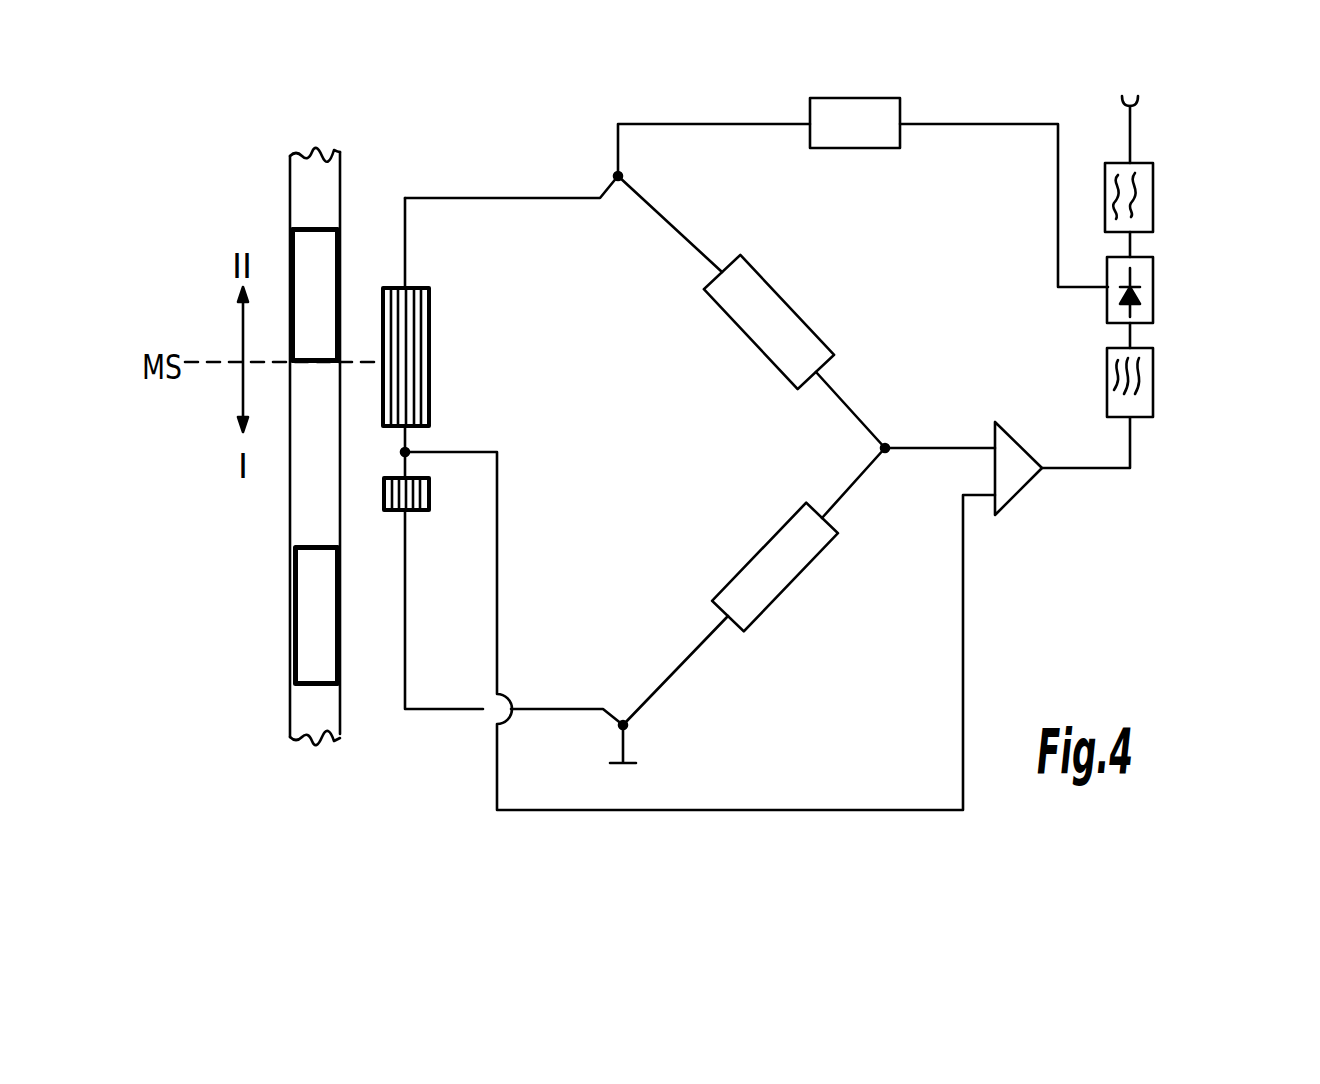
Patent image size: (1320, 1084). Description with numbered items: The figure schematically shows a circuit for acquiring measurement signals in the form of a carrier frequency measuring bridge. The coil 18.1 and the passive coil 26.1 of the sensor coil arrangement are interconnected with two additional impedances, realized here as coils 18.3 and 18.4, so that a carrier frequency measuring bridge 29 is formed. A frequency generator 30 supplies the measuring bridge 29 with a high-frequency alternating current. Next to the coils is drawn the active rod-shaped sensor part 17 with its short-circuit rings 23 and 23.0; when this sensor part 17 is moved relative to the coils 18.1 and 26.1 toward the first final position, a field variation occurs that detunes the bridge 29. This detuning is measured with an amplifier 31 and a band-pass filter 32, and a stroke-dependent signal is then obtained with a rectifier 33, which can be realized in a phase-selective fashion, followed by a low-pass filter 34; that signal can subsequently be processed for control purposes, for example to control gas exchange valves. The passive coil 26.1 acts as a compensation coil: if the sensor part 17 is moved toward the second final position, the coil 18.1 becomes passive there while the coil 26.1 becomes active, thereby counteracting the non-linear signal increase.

The rod-shaped sensor part 17 is at (300, 187).
The short-circuit ring 23 is at (338, 242).
The short-circuit ring 23.0 is at (294, 606).
The coil 18.1 is at (430, 311).
The passive coil 26.1 is at (430, 511).
The coil 18.3 is at (778, 313).
The coil 18.4 is at (790, 563).
The carrier frequency measuring bridge 29 is at (465, 747).
The frequency generator 30 is at (867, 137).
The amplifier 31 is at (1007, 490).
The band-pass filter 32 is at (1153, 405).
The rectifier 33 is at (1153, 310).
The low-pass filter 34 is at (1153, 220).